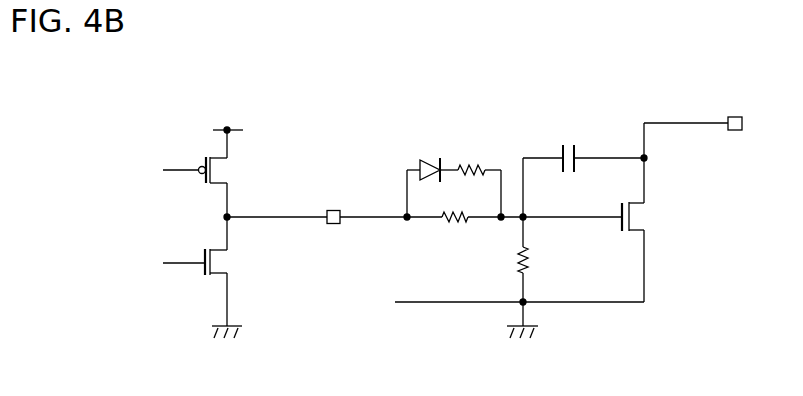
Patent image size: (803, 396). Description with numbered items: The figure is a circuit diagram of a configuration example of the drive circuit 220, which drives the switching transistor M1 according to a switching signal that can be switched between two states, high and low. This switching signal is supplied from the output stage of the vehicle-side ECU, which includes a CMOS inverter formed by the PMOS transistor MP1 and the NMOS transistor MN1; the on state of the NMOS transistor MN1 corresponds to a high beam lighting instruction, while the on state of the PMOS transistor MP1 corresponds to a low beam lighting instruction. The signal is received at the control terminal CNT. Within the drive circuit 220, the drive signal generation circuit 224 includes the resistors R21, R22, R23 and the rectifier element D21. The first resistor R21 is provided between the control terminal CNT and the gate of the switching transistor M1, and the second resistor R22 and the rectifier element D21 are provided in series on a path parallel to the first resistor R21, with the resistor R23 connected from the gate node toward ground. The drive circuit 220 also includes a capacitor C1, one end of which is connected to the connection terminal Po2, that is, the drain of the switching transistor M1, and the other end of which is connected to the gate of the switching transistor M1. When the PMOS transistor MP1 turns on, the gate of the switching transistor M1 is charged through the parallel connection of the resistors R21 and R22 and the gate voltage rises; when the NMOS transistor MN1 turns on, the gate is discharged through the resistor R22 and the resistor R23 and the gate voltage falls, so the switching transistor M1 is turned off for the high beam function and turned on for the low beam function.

The drive circuit 220 is at (622, 96).
The drive signal generation circuit 224 is at (501, 320).
The PMOS transistor MP1 is at (232, 170).
The NMOS transistor MN1 is at (233, 262).
The control terminal CNT is at (318, 226).
The rectifier element D21 is at (424, 156).
The first resistor R21 is at (456, 232).
The second resistor R22 is at (478, 152).
The resistor R23 is at (548, 261).
The capacitor C1 is at (567, 144).
The switching transistor M1 is at (650, 215).
The connection terminal Po2 is at (735, 115).